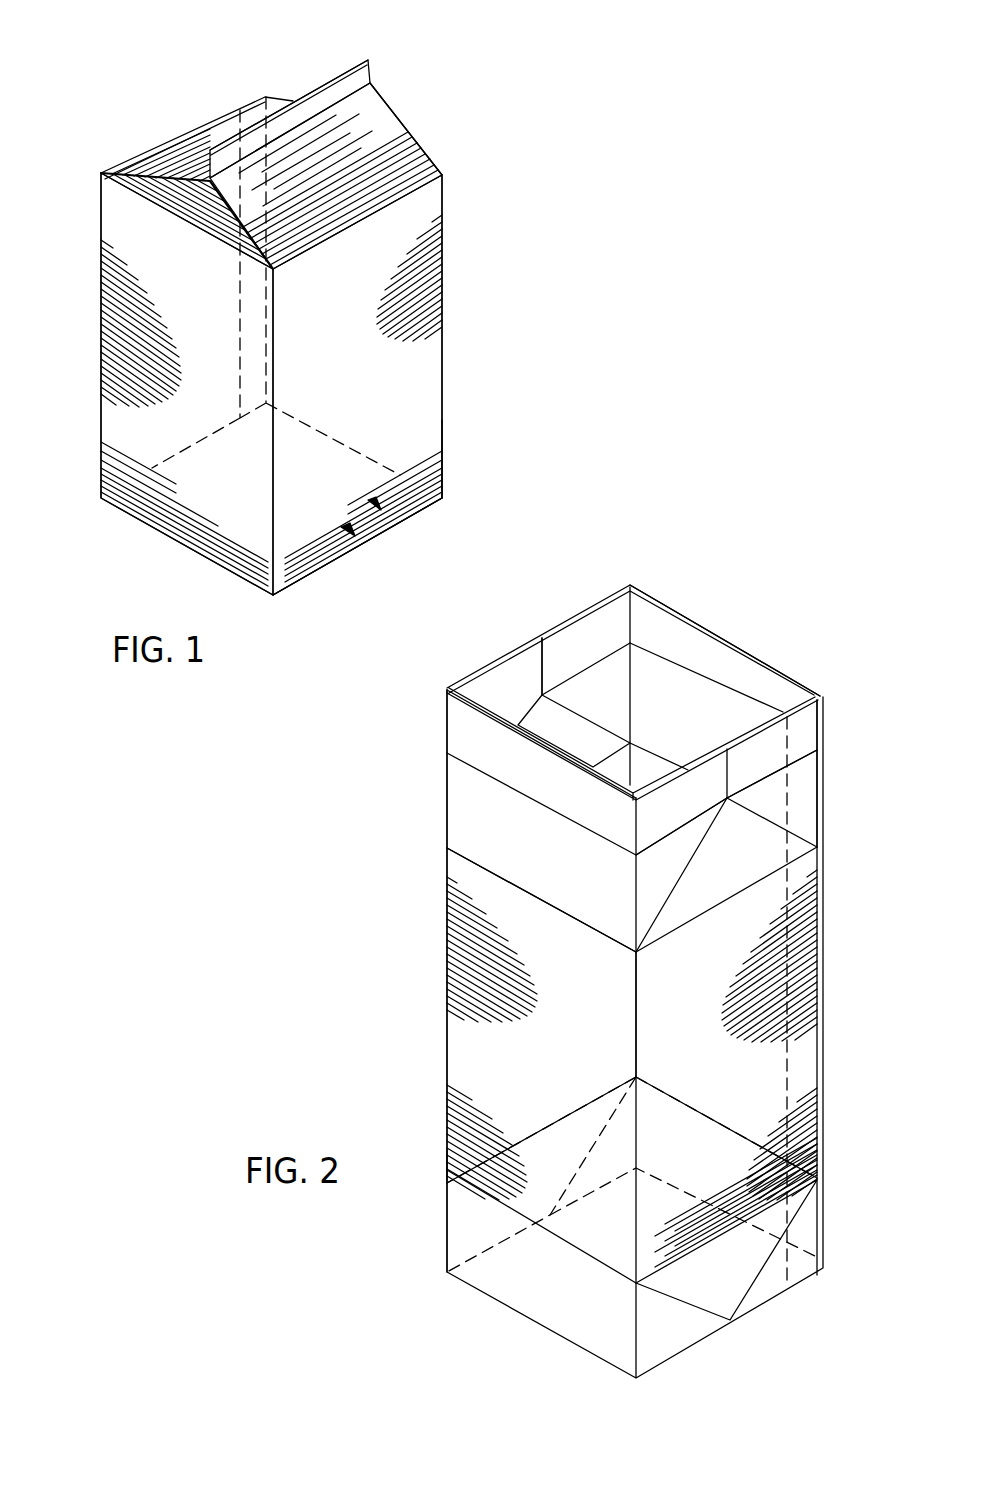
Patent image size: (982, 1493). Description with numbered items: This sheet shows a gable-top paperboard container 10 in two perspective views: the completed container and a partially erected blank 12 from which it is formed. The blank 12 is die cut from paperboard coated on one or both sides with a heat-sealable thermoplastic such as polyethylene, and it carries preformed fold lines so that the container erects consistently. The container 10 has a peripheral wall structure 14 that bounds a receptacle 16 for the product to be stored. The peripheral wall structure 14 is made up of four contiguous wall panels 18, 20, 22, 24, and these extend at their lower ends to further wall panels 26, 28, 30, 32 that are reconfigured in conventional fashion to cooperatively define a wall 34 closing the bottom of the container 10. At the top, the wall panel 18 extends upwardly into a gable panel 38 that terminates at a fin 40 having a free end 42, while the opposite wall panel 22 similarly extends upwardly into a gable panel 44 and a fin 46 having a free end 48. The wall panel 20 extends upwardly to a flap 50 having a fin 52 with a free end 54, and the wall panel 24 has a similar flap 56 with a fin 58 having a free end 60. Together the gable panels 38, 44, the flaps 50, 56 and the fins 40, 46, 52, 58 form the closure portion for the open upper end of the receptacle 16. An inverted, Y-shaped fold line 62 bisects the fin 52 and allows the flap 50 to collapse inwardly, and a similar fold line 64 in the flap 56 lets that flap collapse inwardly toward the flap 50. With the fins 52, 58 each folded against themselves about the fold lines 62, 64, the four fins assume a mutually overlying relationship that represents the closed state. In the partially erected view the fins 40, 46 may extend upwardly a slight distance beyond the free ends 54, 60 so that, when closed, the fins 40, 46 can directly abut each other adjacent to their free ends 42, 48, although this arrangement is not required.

In FIG. 1, the container 10 is at (484, 296).
In FIG. 2, the container 10 is at (830, 756).
In FIG. 1, the paperboard blank 12 is at (435, 421).
In FIG. 2, the paperboard blank 12 is at (450, 1157).
In FIG. 1, the peripheral wall structure 14 is at (449, 361).
In FIG. 2, the peripheral wall structure 14 is at (446, 1071).
In FIG. 1, the receptacle 16 is at (393, 531).
In FIG. 2, the receptacle 16 is at (760, 953).
In FIG. 1, the wall panel 18 is at (152, 353).
In FIG. 2, the wall panel 18 is at (578, 1007).
In FIG. 1, the wall panel 20 is at (200, 527).
In FIG. 2, the wall panel 20 is at (713, 1060).
In FIG. 1, the wall panel 22 is at (444, 449).
In FIG. 2, the wall panel 22 is at (760, 985).
In FIG. 1, the wall panel 24 is at (422, 256).
In FIG. 2, the wall panel 24 is at (485, 997).
In FIG. 2, the wall panel 26 is at (533, 1307).
In FIG. 2, the wall panel 28 is at (738, 1283).
In FIG. 2, the wall panel 30 is at (737, 1150).
In FIG. 2, the wall panel 32 is at (527, 1158).
In FIG. 1, the wall 34 is at (365, 548).
In FIG. 1, the gable panel 38 is at (165, 153).
In FIG. 2, the gable panel 38 is at (473, 828).
In FIG. 1, the fin 40 is at (227, 138).
In FIG. 2, the fin 40 is at (465, 725).
In FIG. 1, the free end 42 is at (343, 72).
In FIG. 2, the free end 42 is at (487, 703).
In FIG. 1, the gable panel 44 is at (395, 153).
In FIG. 2, the gable panel 44 is at (650, 683).
In FIG. 1, the fin 46 is at (360, 86).
In FIG. 2, the fin 46 is at (758, 683).
In FIG. 1, the free end 48 is at (297, 97).
In FIG. 2, the free end 48 is at (720, 630).
In FIG. 2, the flap 50 is at (745, 852).
In FIG. 2, the fin 52 is at (670, 827).
In FIG. 2, the free end 54 is at (657, 783).
In FIG. 2, the flap 56 is at (541, 632).
In FIG. 2, the fin 58 is at (580, 635).
In FIG. 2, the free end 60 is at (557, 632).
In FIG. 2, the fold line 62 is at (783, 827).
In FIG. 2, the fold line 64 is at (537, 673).